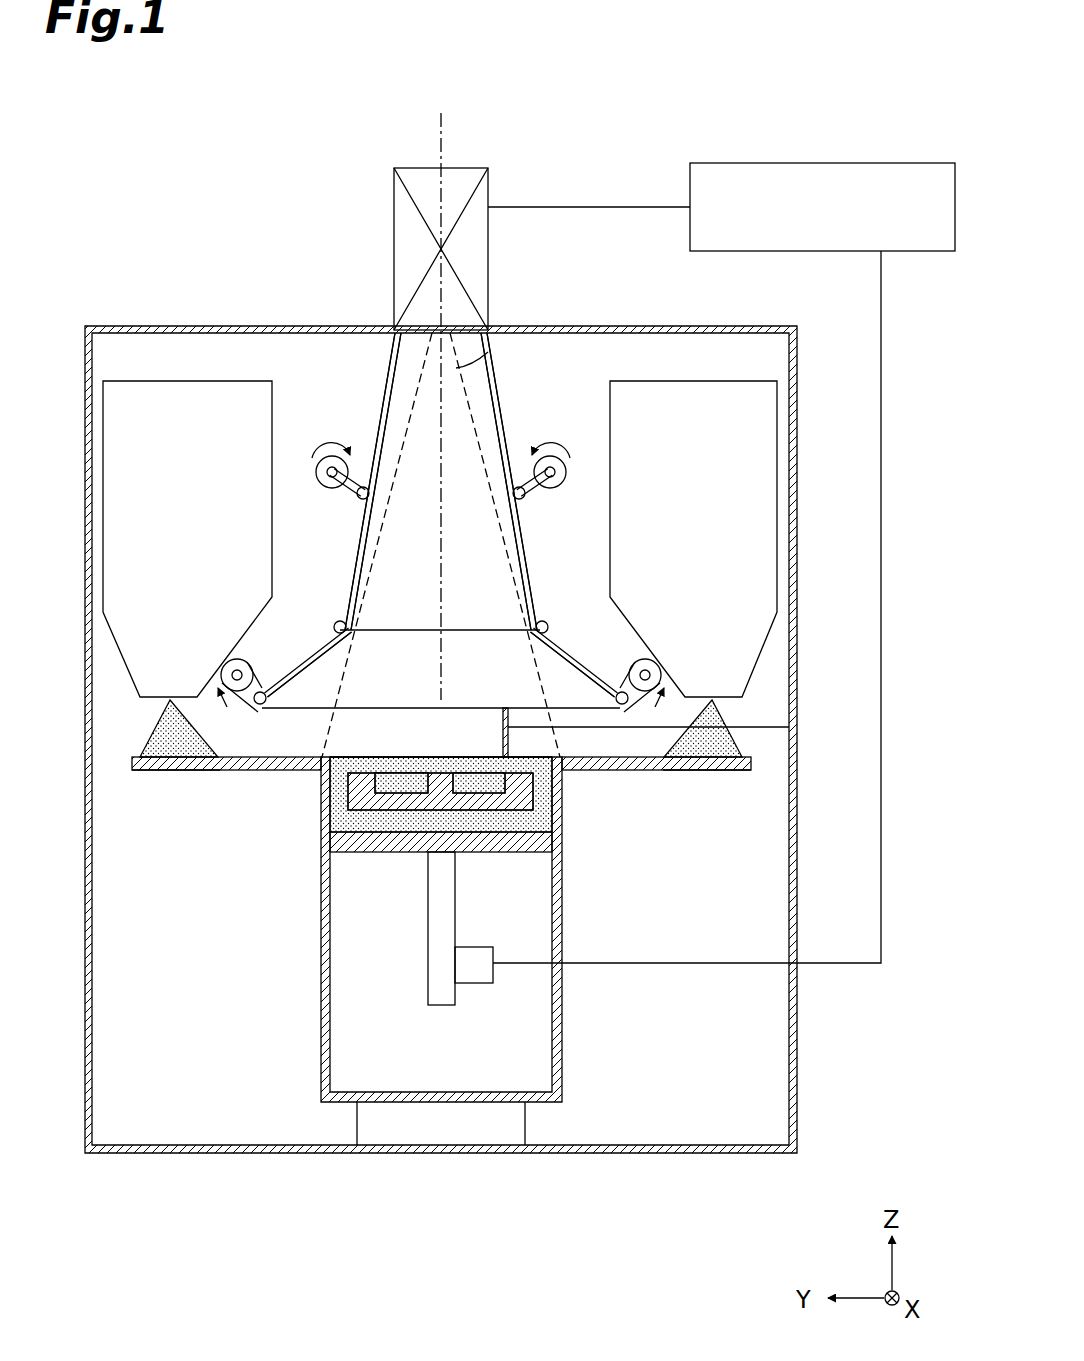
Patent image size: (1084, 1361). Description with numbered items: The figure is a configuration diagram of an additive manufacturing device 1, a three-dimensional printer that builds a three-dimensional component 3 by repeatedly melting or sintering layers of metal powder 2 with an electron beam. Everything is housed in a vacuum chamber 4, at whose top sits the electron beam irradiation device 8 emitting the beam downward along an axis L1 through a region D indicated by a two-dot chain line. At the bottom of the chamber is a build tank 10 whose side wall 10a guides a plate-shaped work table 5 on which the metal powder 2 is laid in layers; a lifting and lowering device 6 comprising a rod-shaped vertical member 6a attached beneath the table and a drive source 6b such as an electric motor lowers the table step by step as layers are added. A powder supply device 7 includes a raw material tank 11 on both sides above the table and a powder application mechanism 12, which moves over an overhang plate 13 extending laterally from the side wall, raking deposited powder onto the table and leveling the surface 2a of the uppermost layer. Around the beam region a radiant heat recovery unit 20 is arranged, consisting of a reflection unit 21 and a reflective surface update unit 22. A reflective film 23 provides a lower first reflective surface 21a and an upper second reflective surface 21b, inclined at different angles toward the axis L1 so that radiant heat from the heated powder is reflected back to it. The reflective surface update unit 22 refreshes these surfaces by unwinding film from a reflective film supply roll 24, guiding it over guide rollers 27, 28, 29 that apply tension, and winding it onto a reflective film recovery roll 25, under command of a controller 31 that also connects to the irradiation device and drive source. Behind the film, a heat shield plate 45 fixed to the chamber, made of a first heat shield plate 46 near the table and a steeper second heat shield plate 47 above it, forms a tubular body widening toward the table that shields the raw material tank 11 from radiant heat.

The additive manufacturing device 1 is at (293, 137).
The metal powder 2 is at (160, 732).
The surface 2a is at (425, 757).
The three-dimensional component 3 is at (350, 798).
The vacuum chamber 4 is at (797, 1047).
The work table 5 is at (555, 843).
The lifting and lowering device 6 is at (540, 955).
The vertical member 6a is at (447, 997).
The drive source 6b is at (483, 973).
The powder supply device 7 is at (440, 545).
The electron beam irradiation device 8 is at (394, 222).
The build tank 10 is at (370, 951).
The side wall 10a is at (322, 995).
The raw material tank 11 is at (145, 381).
The powder application mechanism 12 is at (555, 765).
The overhang plate 13 is at (150, 770).
The radiant heat recovery unit 20 is at (439, 575).
The reflection unit 21 is at (441, 520).
The first reflective surface 21a is at (312, 680).
The second reflective surface 21b is at (503, 510).
The reflective surface update unit 22 is at (335, 437).
The reflective film 23 is at (348, 600).
The reflective film supply roll 24 is at (318, 464).
The reflective film recovery roll 25 is at (222, 665).
The guide roller 27 is at (357, 493).
The guide roller 28 is at (334, 627).
The guide roller 29 is at (258, 705).
The controller 31 is at (875, 163).
The heat shield plate 45 is at (446, 515).
The first heat shield plate 46 is at (288, 672).
The second heat shield plate 47 is at (359, 540).
The axis L1 is at (445, 137).
The region D is at (505, 335).